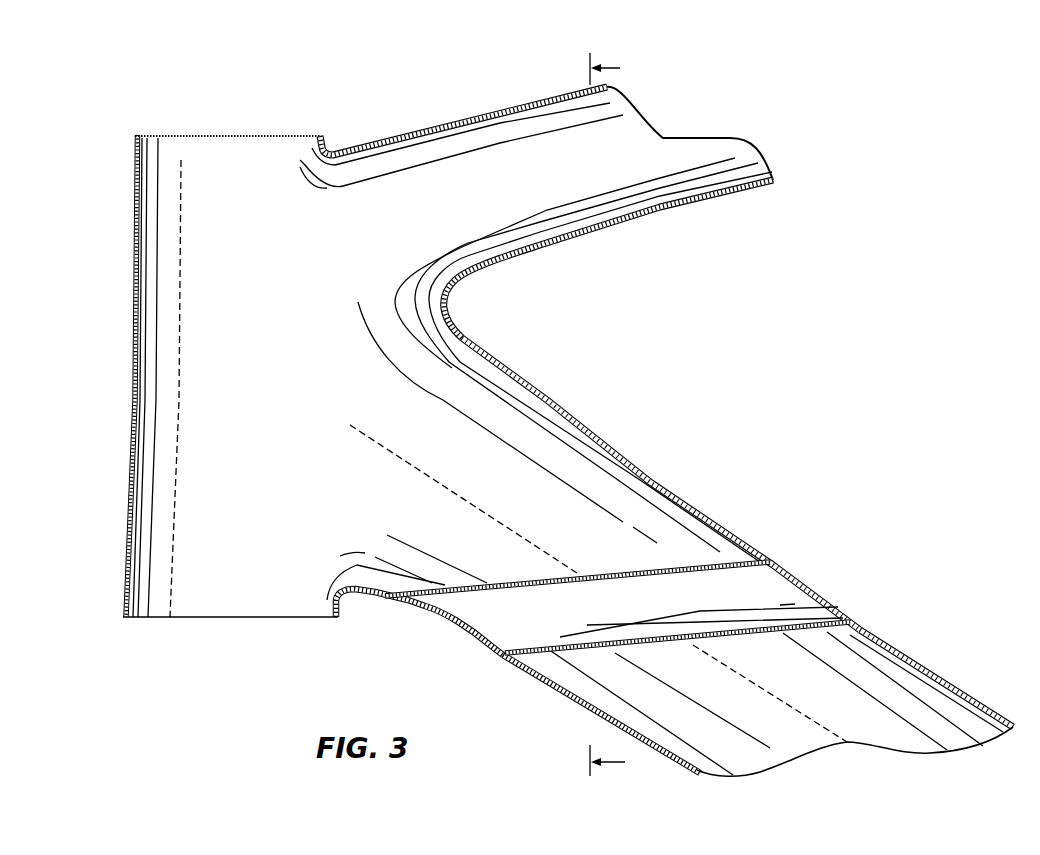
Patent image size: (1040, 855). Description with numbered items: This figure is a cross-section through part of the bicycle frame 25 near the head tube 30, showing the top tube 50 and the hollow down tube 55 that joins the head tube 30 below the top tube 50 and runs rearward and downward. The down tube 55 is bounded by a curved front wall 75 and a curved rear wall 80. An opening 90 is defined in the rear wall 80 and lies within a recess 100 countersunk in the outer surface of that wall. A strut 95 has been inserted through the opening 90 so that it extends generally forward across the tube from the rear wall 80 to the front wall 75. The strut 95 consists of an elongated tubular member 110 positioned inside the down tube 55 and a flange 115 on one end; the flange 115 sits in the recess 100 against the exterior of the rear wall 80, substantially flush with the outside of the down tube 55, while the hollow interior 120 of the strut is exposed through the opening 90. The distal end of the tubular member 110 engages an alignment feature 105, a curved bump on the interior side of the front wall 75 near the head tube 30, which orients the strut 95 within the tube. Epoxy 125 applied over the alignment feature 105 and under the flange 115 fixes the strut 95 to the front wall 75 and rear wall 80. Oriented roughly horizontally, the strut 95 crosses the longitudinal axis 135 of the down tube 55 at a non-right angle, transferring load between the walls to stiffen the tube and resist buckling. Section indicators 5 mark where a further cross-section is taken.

The frame 25 is at (104, 59).
The head tube 30 is at (133, 343).
The top tube 50 is at (455, 121).
The down tube 55 is at (656, 476).
The front wall 75 is at (575, 690).
The rear wall 80 is at (578, 430).
The opening 90 is at (852, 622).
The strut 95 is at (735, 560).
The recess 100 is at (880, 636).
The alignment feature 105 is at (480, 625).
The tubular member 110 is at (620, 596).
The flange 115 is at (765, 554).
The interior 120 is at (800, 589).
The epoxy 125 is at (390, 598).
The longitudinal axis 135 is at (863, 752).
The section line 5- 5 is at (617, 414).